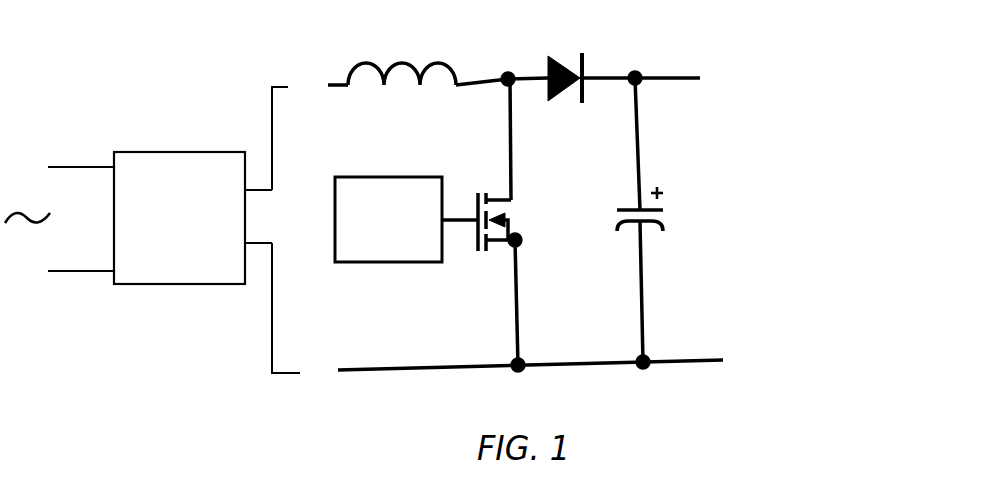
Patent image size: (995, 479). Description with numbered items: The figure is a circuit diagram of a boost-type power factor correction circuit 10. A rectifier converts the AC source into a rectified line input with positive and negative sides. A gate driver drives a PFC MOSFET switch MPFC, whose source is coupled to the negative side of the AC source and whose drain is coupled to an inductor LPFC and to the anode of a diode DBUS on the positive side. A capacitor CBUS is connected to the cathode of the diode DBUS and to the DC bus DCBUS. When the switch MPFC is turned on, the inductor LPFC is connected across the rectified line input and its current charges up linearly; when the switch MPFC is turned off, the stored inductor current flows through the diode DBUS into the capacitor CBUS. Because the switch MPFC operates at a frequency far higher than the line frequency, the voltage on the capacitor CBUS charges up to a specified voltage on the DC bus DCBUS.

The circuit 10 is at (421, 202).
The inductor LPFC is at (392, 54).
The diode DBUS is at (568, 60).
The DC bus DCBUS is at (692, 75).
The PFC MOSFET switch MPFC is at (540, 222).
The capacitor CBUS is at (676, 225).